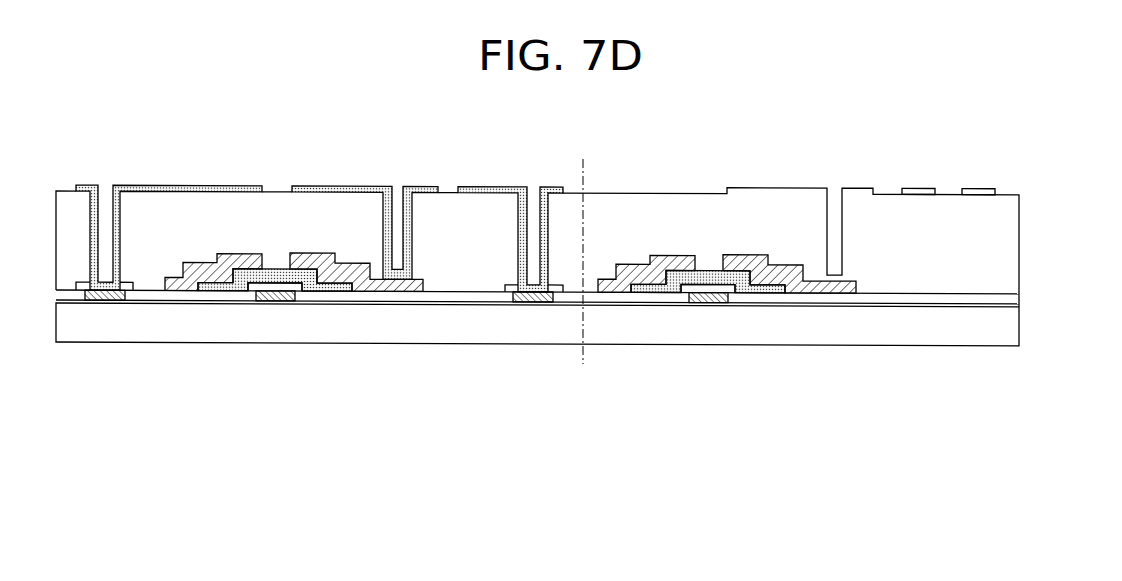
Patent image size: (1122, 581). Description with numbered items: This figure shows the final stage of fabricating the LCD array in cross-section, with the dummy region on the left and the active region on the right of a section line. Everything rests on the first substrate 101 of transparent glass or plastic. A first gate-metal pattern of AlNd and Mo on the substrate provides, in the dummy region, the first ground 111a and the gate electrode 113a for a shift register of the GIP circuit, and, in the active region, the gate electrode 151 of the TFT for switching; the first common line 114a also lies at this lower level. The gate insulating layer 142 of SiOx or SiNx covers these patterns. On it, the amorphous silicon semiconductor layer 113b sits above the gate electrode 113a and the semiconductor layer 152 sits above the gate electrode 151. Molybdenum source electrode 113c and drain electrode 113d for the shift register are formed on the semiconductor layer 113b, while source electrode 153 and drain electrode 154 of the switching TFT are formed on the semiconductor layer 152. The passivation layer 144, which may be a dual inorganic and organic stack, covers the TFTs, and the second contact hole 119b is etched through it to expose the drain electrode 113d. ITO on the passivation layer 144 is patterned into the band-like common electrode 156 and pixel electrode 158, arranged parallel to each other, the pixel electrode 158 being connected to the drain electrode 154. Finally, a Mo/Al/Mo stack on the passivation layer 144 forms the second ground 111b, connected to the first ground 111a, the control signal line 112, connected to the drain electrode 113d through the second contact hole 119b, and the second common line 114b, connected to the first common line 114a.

The first substrate 101 is at (1019, 333).
The gate insulating layer 142 is at (1019, 300).
The passivation layer 144 is at (1019, 246).
The first ground 111a is at (103, 300).
The second ground 111b is at (178, 185).
The control signal line 112 is at (335, 185).
The gate electrode for a shift register 113a is at (275, 300).
The semiconductor layer for a shift register 113b is at (327, 290).
The source electrode for a shift register 113c is at (185, 290).
The drain electrode for a shift register 113d is at (375, 290).
The first common line 114a is at (535, 300).
The second common line 114b is at (495, 185).
The second contact hole 119b is at (403, 142).
The gate electrode of the TFT for switching 151 is at (710, 300).
The semiconductor layer of the TFT for switching 152 is at (760, 290).
The source electrode of the TFT for switching 153 is at (620, 290).
The drain electrode of the TFT for switching 154 is at (810, 290).
The common electrode 156 is at (918, 185).
The pixel electrode 158 is at (978, 185).